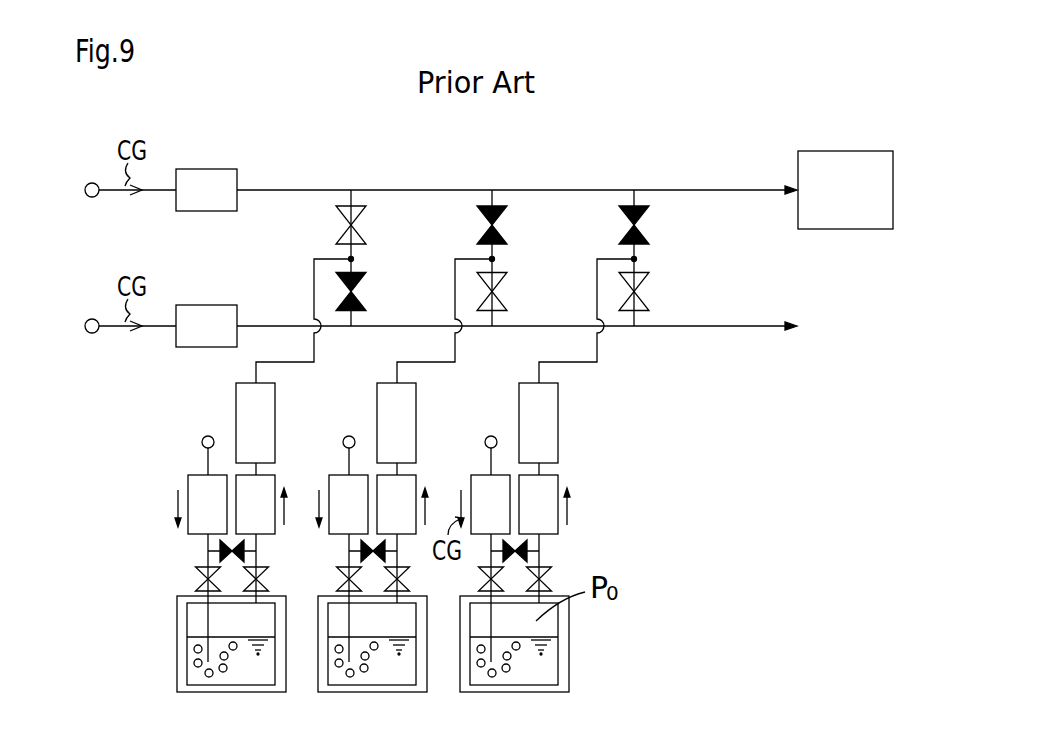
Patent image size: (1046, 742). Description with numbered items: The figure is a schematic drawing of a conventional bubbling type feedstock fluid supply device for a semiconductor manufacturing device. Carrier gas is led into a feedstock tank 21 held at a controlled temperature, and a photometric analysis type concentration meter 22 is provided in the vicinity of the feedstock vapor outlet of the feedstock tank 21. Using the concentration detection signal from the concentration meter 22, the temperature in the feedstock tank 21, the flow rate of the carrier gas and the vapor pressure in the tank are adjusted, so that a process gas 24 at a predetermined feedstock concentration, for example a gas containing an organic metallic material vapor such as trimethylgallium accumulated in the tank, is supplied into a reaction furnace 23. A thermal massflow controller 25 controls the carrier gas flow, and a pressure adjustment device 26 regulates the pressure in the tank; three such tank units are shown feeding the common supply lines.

The feedstock tank 21 is at (558, 623).
The photometric analysis type concentration meter 22 is at (544, 428).
The reaction furnace 23 is at (843, 177).
The process gas 24 is at (791, 186).
The thermal massflow controller 25 is at (481, 492).
The pressure adjustment device 26 is at (543, 488).